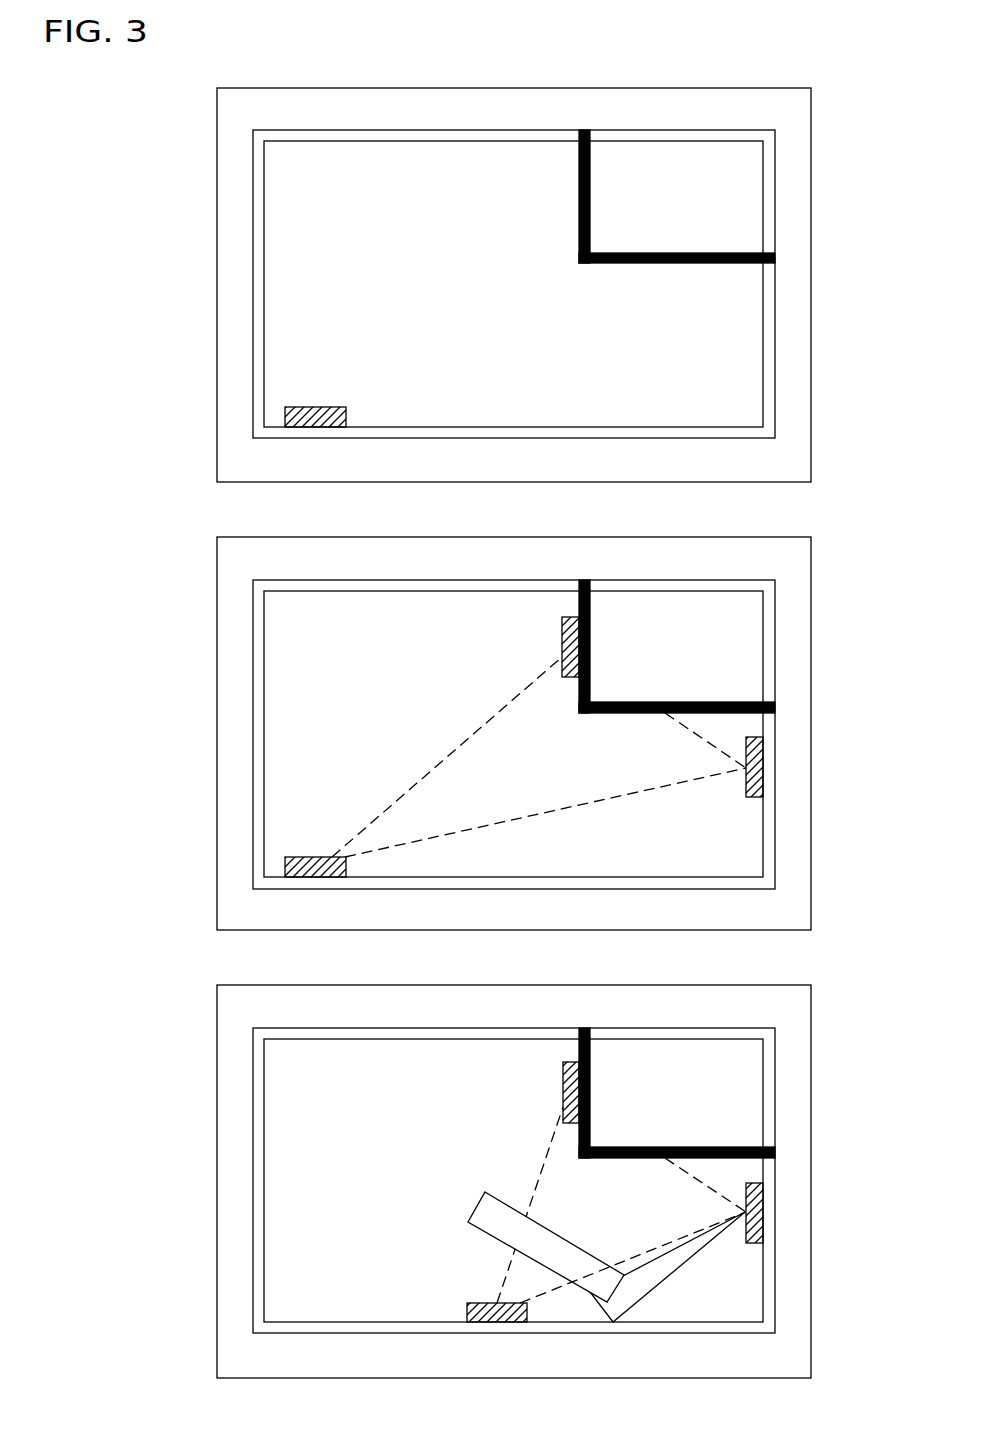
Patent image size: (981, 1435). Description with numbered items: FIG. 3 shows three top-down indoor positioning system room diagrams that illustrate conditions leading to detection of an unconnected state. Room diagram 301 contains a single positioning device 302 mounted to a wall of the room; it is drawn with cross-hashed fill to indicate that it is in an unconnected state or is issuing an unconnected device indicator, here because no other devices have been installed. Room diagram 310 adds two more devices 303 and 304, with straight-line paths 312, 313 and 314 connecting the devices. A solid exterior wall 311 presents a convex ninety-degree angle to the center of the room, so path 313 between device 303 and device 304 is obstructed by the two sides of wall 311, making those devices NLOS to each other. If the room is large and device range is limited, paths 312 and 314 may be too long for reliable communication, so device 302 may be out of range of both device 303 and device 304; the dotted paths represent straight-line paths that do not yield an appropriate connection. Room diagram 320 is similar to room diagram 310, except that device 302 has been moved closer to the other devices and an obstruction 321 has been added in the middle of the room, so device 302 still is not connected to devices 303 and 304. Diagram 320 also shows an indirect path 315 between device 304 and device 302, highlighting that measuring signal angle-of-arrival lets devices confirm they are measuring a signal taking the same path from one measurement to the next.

The room diagram 301 is at (795, 136).
The positioning device 302 is at (318, 407).
The positioning device 303 is at (562, 640).
The positioning device 304 is at (746, 780).
The room diagram 310 is at (795, 585).
The solid exterior wall 311 is at (752, 702).
The straight-line path 312 is at (447, 752).
The straight-line path 313 is at (700, 737).
The straight-line path 314 is at (515, 817).
The indirect path 315 is at (663, 1282).
The room diagram 320 is at (795, 1033).
The obstruction 321 is at (495, 1195).